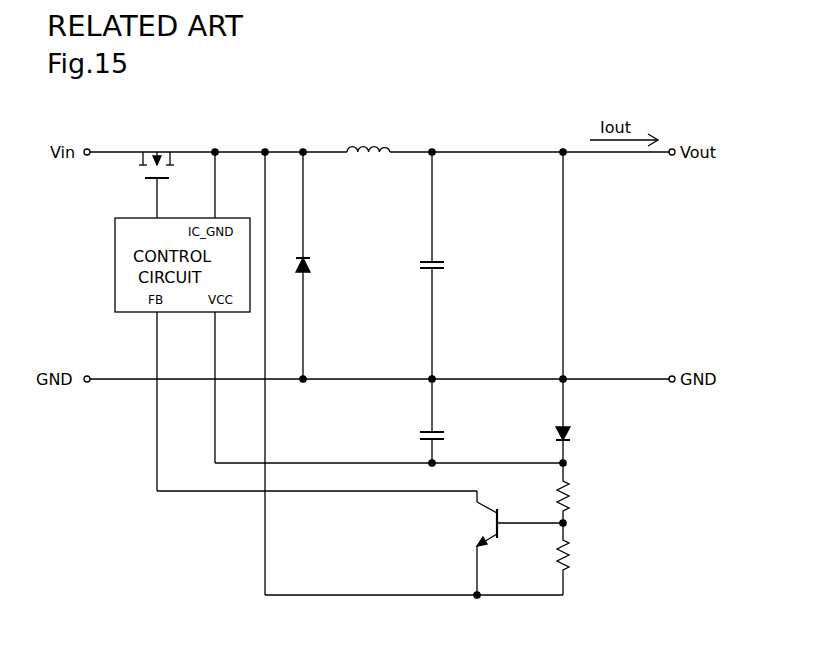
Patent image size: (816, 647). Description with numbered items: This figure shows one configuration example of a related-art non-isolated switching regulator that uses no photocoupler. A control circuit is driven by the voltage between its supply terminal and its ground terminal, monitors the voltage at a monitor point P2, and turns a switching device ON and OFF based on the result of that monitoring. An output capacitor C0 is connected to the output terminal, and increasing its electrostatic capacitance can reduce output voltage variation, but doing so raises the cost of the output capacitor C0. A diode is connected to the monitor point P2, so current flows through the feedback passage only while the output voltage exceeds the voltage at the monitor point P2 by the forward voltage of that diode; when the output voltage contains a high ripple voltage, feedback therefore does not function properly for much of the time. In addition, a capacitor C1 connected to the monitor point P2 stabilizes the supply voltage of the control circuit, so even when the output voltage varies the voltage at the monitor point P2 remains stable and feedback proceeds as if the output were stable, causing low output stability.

The output capacitor C0 is at (447, 265).
The capacitor C1 is at (447, 436).
The monitor point P2 is at (570, 460).